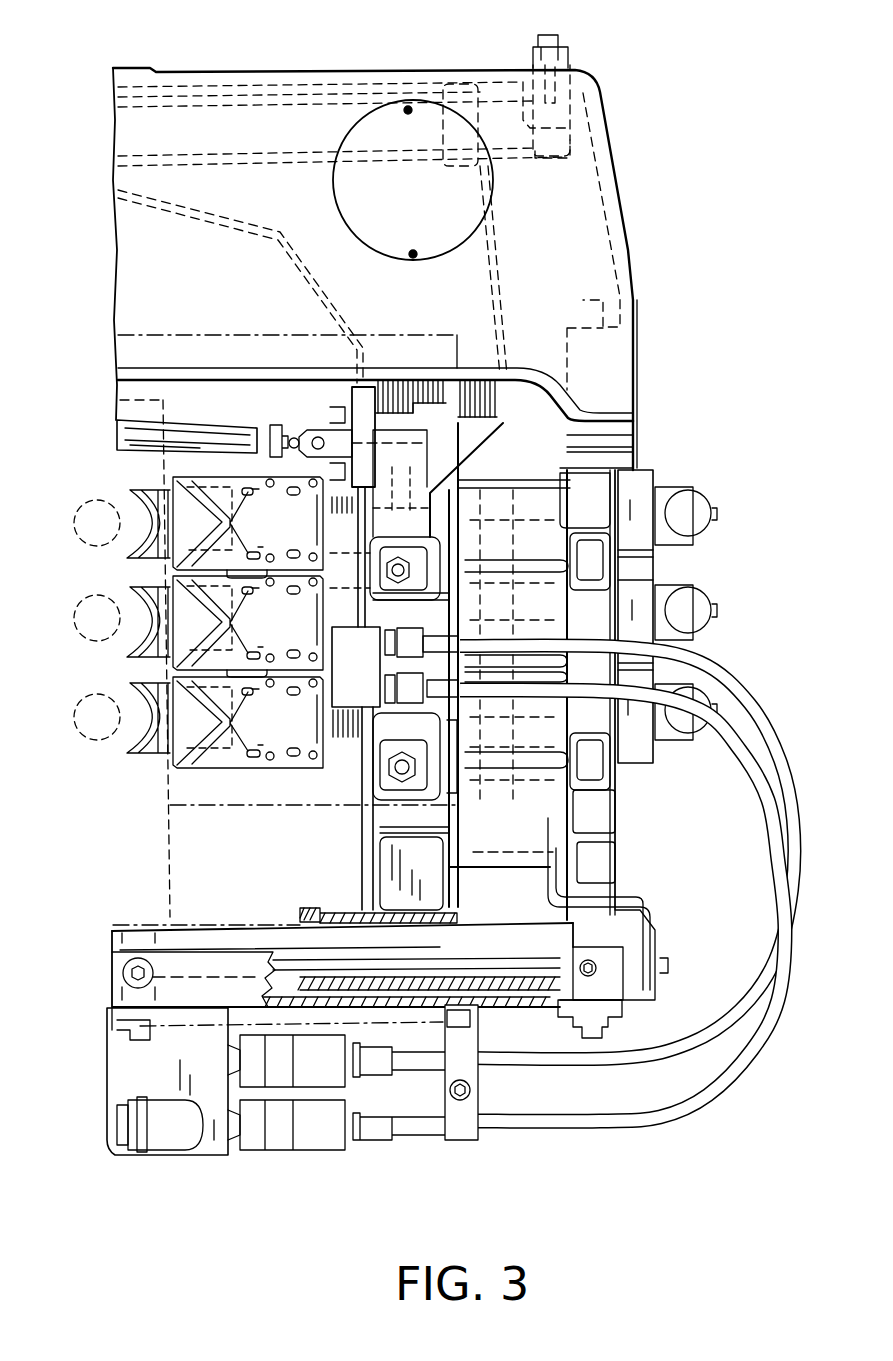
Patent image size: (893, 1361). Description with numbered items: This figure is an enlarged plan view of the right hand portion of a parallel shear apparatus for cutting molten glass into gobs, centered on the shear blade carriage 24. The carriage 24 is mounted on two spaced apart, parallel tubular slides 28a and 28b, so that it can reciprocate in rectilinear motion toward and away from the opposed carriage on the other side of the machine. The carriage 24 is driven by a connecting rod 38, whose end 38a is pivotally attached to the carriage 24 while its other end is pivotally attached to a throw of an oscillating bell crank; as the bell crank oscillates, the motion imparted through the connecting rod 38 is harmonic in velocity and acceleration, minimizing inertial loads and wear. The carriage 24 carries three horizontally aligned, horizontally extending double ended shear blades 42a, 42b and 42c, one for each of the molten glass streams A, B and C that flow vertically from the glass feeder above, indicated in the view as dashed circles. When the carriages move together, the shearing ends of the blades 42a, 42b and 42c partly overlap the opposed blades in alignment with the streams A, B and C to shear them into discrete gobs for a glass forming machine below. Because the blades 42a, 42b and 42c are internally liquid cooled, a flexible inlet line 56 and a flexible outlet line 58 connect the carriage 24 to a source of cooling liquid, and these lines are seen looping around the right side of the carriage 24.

The shear blade carriage 24 is at (486, 447).
The tubular slide 28a is at (530, 918).
The tubular slide 28b is at (301, 103).
The connecting rod 38 is at (128, 450).
The end of connecting rod 38a is at (313, 433).
The shear blade 42a is at (128, 549).
The shear blade 42b is at (127, 652).
The shear blade 42c is at (143, 753).
The molten glass stream A is at (73, 523).
The molten glass stream B is at (73, 617).
The molten glass stream C is at (73, 716).
The flexible inlet line 56 is at (563, 1120).
The flexible outlet line 58 is at (672, 1040).